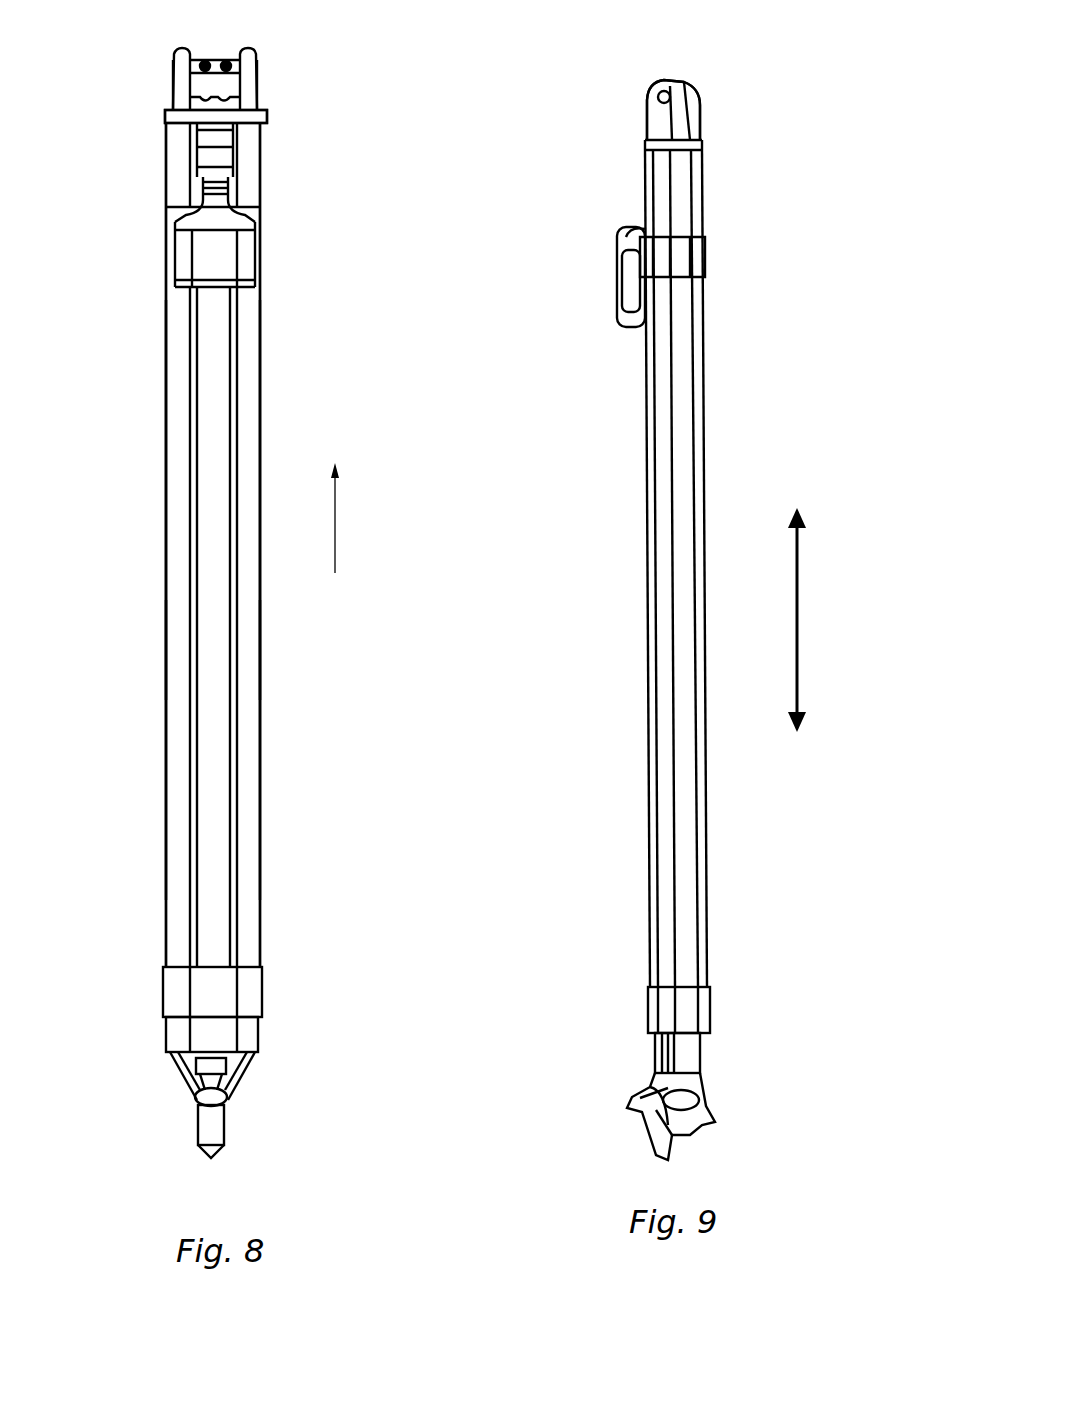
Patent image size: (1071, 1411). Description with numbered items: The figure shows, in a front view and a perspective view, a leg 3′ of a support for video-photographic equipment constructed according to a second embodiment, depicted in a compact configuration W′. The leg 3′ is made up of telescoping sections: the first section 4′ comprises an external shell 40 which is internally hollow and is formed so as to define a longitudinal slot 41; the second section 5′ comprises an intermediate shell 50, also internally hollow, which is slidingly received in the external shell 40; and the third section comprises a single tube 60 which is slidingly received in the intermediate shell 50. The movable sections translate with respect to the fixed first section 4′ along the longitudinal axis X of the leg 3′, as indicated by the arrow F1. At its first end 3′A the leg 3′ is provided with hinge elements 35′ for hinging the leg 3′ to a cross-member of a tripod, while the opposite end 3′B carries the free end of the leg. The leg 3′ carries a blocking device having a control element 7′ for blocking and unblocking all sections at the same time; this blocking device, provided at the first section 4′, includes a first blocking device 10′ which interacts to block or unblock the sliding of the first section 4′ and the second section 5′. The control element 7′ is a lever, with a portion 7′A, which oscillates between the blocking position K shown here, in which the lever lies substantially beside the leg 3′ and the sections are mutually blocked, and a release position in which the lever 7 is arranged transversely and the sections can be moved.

In FIG. 8, the hinge elements 35′ is at (148, 62).
In FIG. 9, the hinge elements 35′ is at (728, 92).
In FIG. 8, the first end 3′A is at (298, 88).
In FIG. 9, the first end 3′A is at (780, 148).
In FIG. 8, the leg 3′ is at (356, 214).
In FIG. 8, the control element 7′ is at (264, 198).
In FIG. 8, the first blocking device 10′ is at (122, 231).
In FIG. 9, the first blocking device 10′ is at (736, 257).
In FIG. 8, the bracket / box portion 7′A is at (190, 247).
In FIG. 9, the bracket / box portion 7′A is at (615, 290).
In FIG. 8, the first section 4′ is at (312, 343).
In FIG. 8, the external shell 40 is at (165, 444).
In FIG. 8, the longitudinal slot 41 is at (180, 605).
In FIG. 8, the second section 5′ is at (300, 705).
In FIG. 8, the intermediate shell 50 is at (210, 765).
In FIG. 8, the lower end of actuator 3′B is at (250, 1155).
In FIG. 9, the lower end of actuator 3′B is at (760, 1100).
In FIG. 8, the longitudinal axis X is at (335, 530).
In FIG. 9, the bracket 7 is at (608, 256).
In FIG. 9, the blocking position K is at (828, 310).
In FIG. 9, the compact configuration W′ is at (590, 460).
In FIG. 9, the arrow F1 is at (819, 620).
In FIG. 9, the single tube 60 is at (724, 1054).